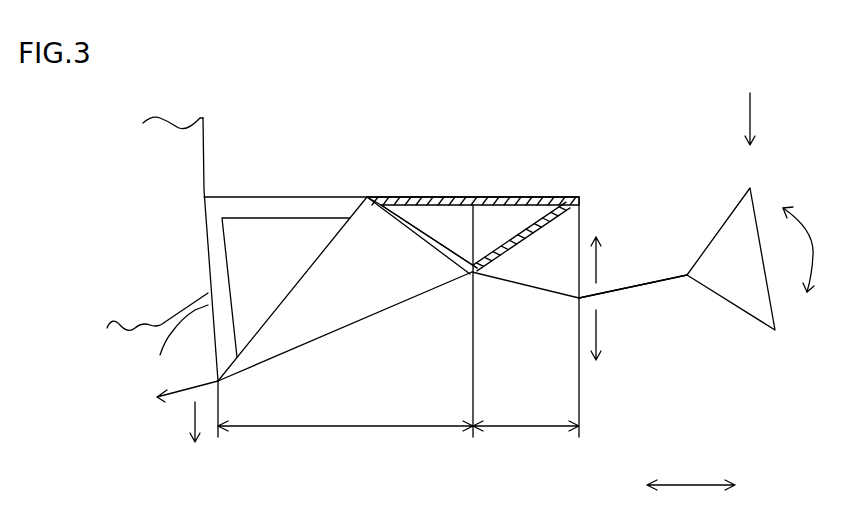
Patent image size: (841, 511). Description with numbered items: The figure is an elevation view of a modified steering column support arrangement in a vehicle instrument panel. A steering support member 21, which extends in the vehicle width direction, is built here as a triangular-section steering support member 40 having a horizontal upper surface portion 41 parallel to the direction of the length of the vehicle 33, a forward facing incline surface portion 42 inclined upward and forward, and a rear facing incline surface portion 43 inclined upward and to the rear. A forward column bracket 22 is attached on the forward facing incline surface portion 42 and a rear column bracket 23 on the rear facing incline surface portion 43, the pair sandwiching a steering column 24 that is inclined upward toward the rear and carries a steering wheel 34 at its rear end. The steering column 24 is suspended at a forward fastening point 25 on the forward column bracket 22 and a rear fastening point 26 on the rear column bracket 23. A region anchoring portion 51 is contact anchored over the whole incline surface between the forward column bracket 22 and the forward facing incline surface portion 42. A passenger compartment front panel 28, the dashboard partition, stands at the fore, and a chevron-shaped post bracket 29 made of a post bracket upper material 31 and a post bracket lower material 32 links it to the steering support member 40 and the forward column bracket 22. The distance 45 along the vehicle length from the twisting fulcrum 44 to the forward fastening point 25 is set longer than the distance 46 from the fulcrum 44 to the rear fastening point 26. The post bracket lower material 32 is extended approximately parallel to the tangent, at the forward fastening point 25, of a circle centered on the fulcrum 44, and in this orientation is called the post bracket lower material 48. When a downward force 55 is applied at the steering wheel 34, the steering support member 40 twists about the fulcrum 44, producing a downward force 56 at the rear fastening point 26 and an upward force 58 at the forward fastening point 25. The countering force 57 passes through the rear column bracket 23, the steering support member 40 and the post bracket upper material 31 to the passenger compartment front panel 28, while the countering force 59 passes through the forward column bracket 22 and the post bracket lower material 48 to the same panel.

The steering support member 21 is at (420, 192).
The steering support member 40 is at (422, 192).
The column bracket 22 is at (340, 330).
The column bracket 23 is at (500, 282).
The steering column 24 is at (677, 275).
The fastening point 25 is at (222, 383).
The fastening point 26 is at (587, 296).
The passenger compartment front panel 28 is at (207, 130).
The post bracket 29 is at (325, 167).
The post bracket upper material 31 is at (263, 197).
The post bracket lower material 32 is at (142, 338).
The post bracket lower material 48 is at (142, 338).
The direction of the length of the vehicle 33 is at (693, 485).
The steering wheel 34 is at (753, 200).
The horizontal upper surface portion 41 is at (543, 197).
The forward facing incline surface portion 42 is at (410, 217).
The rear facing incline surface portion 43 is at (538, 222).
The fulcrum 44 is at (473, 220).
The distance 45 is at (358, 427).
The distance 46 is at (522, 427).
The region anchoring portion 51 is at (433, 252).
The force 55 is at (751, 112).
The force 56 is at (598, 315).
The countering force 57 is at (603, 247).
The force 58 is at (193, 425).
The countering force 59 is at (195, 350).